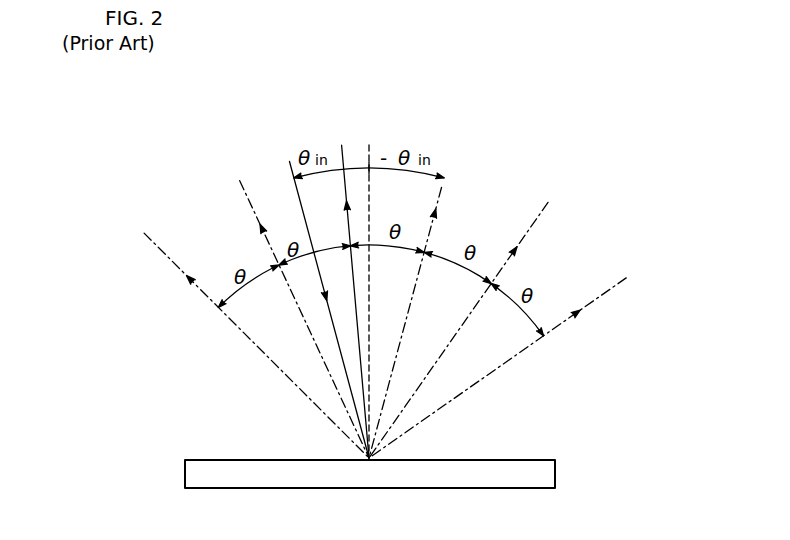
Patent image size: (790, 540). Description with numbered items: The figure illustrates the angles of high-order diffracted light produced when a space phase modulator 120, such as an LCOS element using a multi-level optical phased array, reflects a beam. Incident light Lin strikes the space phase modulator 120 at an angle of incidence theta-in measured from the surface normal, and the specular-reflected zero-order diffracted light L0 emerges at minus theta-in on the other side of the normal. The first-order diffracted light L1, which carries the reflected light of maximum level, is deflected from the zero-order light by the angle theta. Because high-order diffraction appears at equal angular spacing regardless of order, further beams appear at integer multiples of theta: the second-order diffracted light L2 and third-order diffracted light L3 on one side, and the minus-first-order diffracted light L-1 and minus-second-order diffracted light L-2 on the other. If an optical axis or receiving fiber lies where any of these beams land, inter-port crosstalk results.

The space phase modulator 120 is at (558, 474).
The 1st-order diffracted light L1 is at (337, 160).
The incident light Lin is at (288, 163).
The 2nd-order diffracted light L2 is at (247, 198).
The 3rd-order diffracted light L3 is at (170, 260).
The 0-order diffracted light L0 is at (445, 183).
The -1st-order diffracted light L-1 is at (537, 218).
The -2nd-order diffracted light L-2 is at (603, 297).